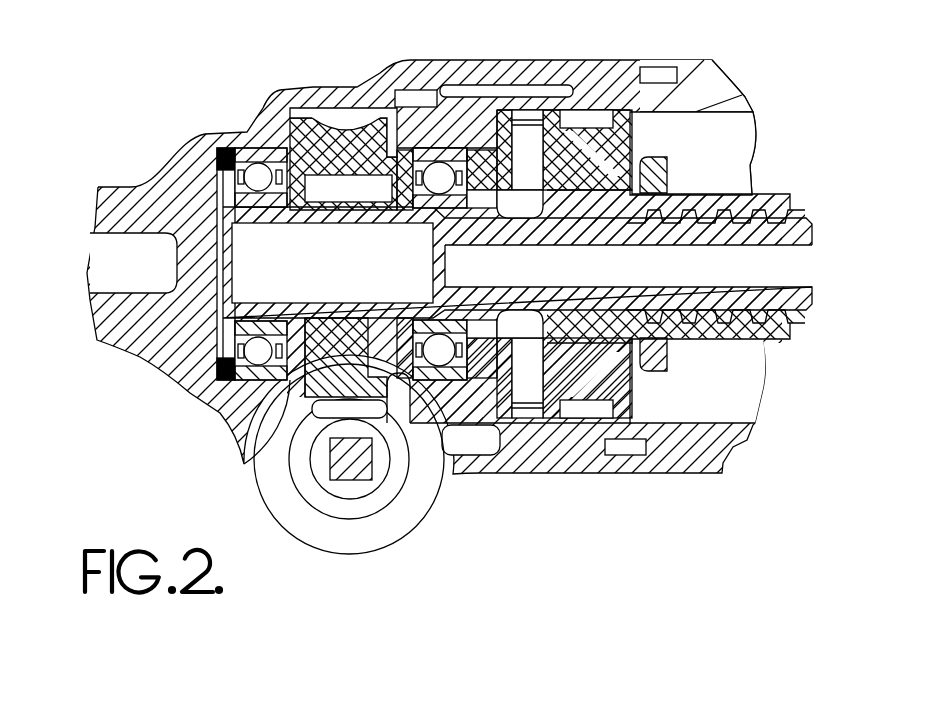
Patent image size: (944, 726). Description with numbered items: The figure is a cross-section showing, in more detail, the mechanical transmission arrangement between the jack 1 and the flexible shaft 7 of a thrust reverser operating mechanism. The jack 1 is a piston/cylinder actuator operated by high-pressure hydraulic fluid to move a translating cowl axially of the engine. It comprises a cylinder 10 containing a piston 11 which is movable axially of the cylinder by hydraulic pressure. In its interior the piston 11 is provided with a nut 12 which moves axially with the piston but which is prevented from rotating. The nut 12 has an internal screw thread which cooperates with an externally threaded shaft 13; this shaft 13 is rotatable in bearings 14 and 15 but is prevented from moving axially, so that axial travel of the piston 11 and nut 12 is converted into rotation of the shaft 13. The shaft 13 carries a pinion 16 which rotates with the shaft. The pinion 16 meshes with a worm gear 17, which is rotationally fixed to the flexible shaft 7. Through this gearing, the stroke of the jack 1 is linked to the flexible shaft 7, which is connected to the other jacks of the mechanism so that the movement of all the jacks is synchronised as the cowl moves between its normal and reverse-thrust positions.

The jack 1 is at (663, 485).
The flexible shaft 7 is at (328, 462).
The cylinder 10 is at (699, 100).
The piston 11 is at (754, 197).
The nut 12 is at (569, 158).
The externally threaded shaft 13 is at (789, 237).
The bearing 14 is at (253, 160).
The bearing 15 is at (449, 152).
The pinion 16 is at (343, 120).
The worm gear 17 is at (382, 496).